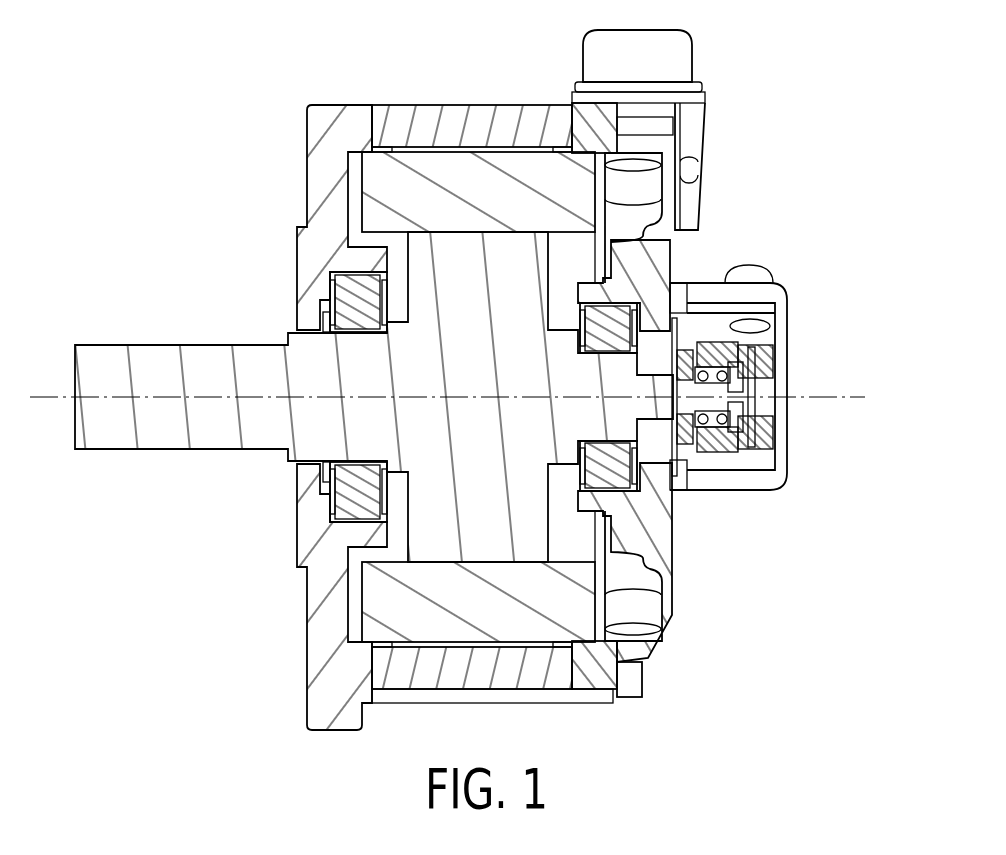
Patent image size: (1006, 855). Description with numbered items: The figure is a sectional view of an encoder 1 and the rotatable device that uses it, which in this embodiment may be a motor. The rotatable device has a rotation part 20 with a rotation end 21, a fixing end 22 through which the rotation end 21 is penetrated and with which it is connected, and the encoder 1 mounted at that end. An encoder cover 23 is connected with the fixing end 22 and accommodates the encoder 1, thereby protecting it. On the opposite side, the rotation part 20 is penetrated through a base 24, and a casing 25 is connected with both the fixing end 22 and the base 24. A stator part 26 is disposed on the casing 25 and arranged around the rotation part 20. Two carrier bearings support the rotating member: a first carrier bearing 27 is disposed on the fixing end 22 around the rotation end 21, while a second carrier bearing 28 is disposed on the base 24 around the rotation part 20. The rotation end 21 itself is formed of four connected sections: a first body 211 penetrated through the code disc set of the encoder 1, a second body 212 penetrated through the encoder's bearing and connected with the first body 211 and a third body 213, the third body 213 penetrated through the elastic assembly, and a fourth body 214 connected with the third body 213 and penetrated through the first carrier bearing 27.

The encoder 1 is at (717, 437).
The rotation part 20 is at (233, 328).
The rotation end 21 is at (907, 122).
The first body 211 is at (757, 333).
The second body 212 is at (712, 388).
The third body 213 is at (683, 387).
The fourth body 214 is at (613, 383).
The fixing end 22 is at (657, 555).
The encoder cover 23 is at (778, 350).
The base 24 is at (330, 625).
The casing 25 is at (467, 668).
The stator part 26 is at (392, 607).
The first carrier bearing 27 is at (673, 523).
The second carrier bearing 28 is at (355, 293).